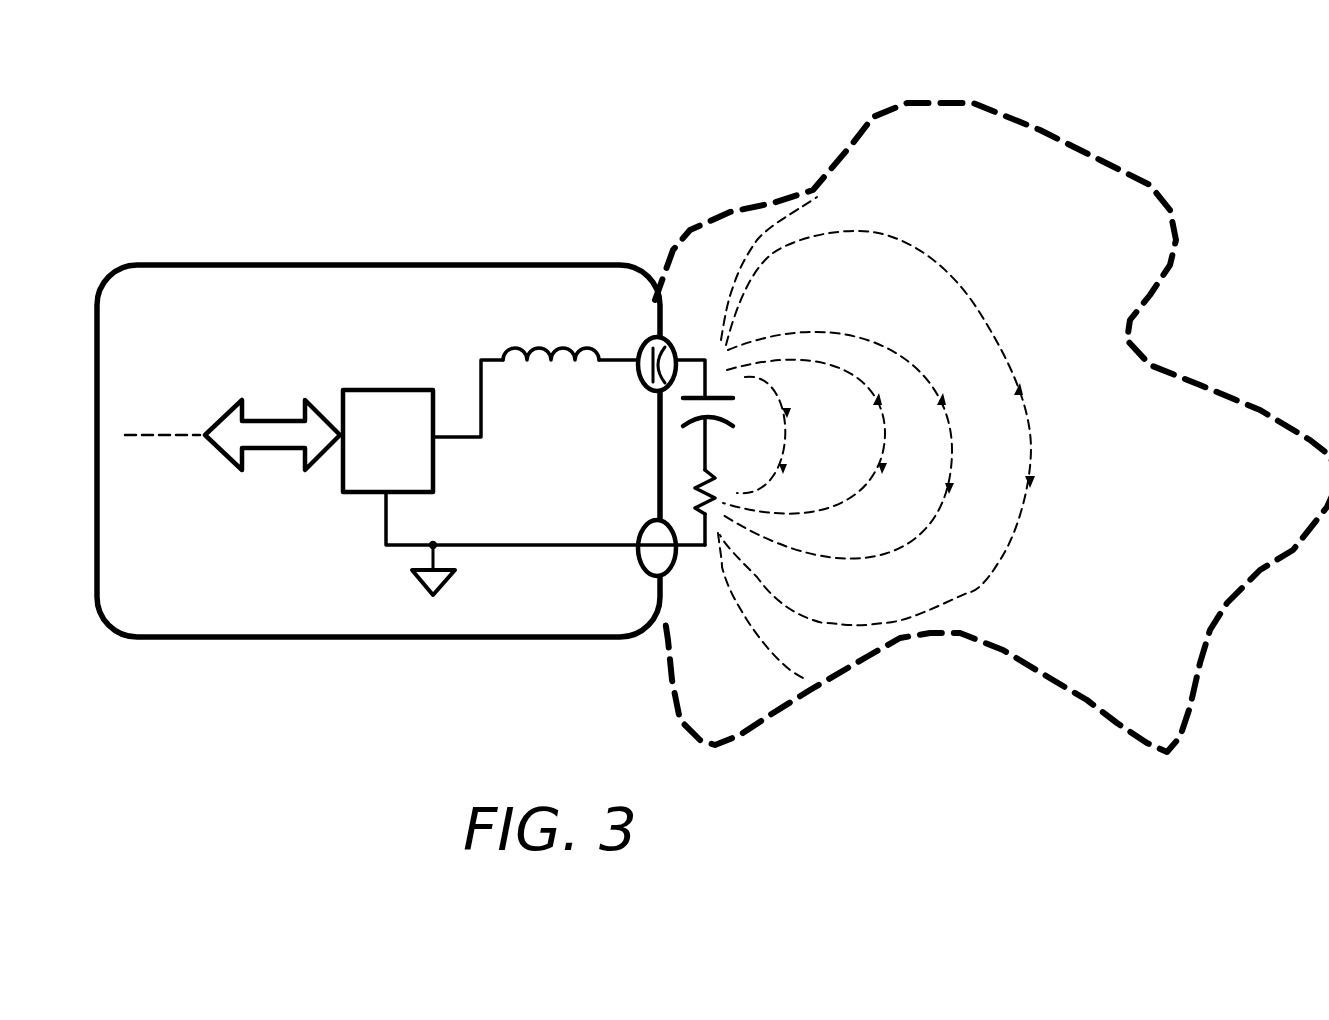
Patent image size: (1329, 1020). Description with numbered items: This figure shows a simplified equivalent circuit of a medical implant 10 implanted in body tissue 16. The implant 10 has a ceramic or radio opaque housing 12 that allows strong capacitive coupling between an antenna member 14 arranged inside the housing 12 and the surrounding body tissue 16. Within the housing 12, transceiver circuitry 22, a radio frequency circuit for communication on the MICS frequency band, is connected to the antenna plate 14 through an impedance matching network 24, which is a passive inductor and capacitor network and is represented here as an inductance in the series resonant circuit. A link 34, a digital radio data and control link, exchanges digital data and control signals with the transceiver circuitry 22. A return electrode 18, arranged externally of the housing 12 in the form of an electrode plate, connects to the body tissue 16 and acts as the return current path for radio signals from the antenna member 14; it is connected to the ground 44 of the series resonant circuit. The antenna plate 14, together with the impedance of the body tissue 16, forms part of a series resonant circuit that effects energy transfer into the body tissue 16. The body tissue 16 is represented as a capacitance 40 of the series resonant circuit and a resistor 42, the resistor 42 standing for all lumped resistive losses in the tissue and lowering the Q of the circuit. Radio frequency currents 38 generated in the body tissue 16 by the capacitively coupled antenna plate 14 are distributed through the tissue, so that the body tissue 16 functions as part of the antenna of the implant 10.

The medical implant 10 is at (420, 180).
The housing 12 is at (328, 263).
The antenna member 14 is at (645, 345).
The body tissue 16 is at (1113, 207).
The return electrode 18 is at (647, 573).
The transceiver circuitry 22 is at (340, 485).
The impedance matching network 24 is at (535, 345).
The link 34 is at (247, 422).
The radio frequency currents 38 is at (945, 265).
The capacitance 40 is at (720, 385).
The resistor 42 is at (700, 515).
The ground 44 is at (433, 596).